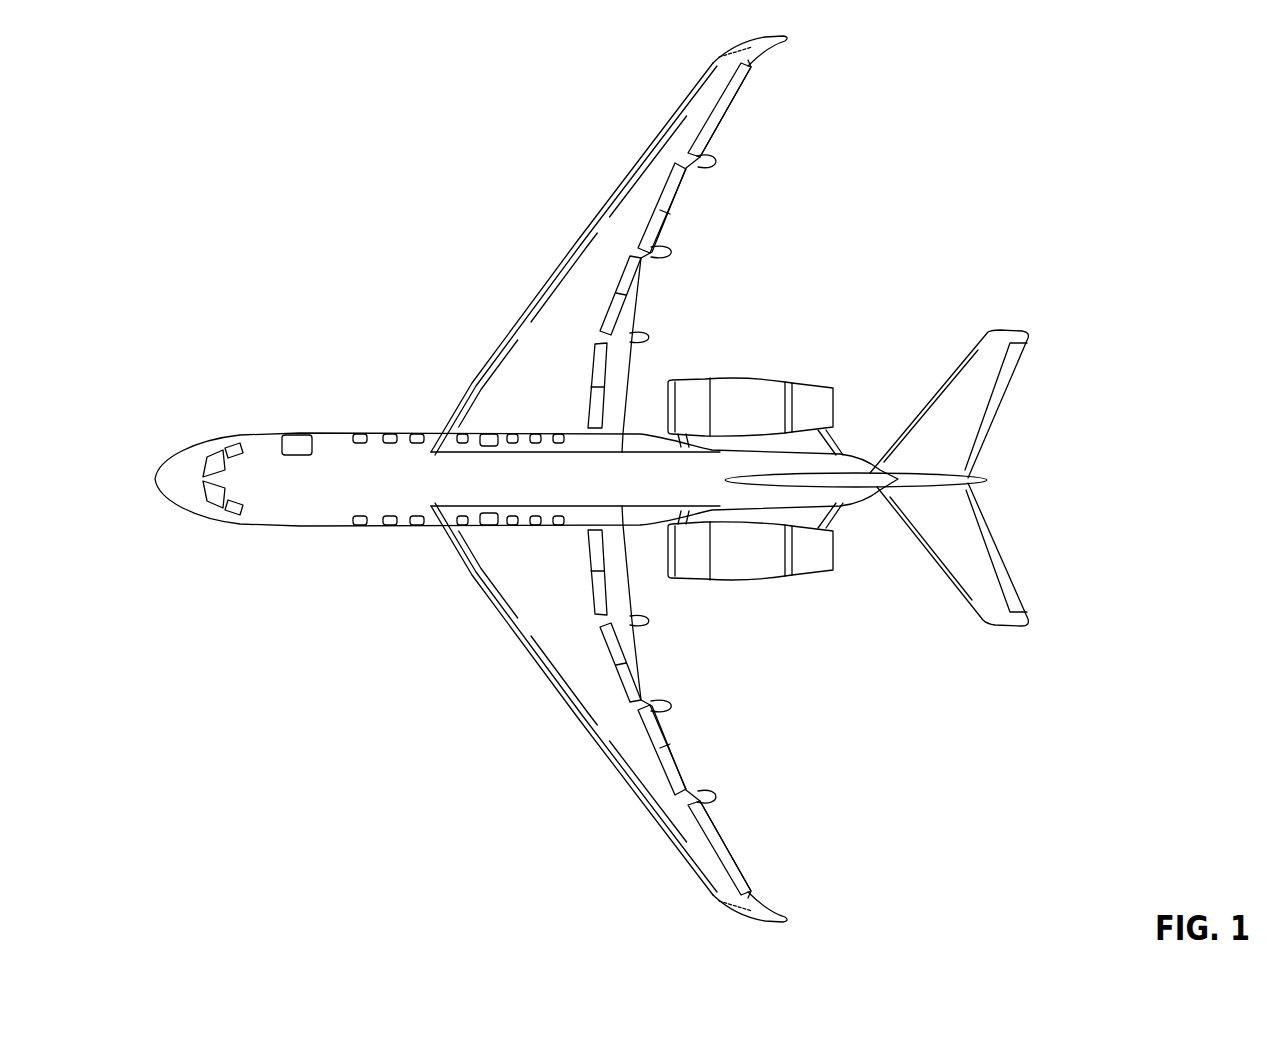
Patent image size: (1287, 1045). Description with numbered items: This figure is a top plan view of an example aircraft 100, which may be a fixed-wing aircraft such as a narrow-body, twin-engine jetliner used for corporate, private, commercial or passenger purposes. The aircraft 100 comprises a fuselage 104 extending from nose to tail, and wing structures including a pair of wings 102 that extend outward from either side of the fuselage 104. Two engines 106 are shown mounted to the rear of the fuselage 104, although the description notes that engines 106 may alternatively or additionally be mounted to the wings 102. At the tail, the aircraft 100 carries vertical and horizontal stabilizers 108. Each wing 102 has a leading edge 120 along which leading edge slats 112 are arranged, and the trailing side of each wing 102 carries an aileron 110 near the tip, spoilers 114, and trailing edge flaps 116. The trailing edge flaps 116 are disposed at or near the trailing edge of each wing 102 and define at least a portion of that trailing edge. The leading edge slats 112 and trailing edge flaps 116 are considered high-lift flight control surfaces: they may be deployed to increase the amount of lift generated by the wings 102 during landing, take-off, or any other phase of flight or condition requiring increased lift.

The aircraft 100 is at (327, 198).
The wing 102 is at (616, 479).
The fuselage 104 is at (335, 513).
The engine 106 is at (772, 407).
The vertical and horizontal stabilizers 108 is at (967, 473).
The aileron 110 is at (720, 111).
The leading edge slat 112 is at (621, 178).
The spoiler 114 is at (673, 188).
The trailing edge flap 116 is at (647, 273).
The leading edge 120 is at (572, 248).